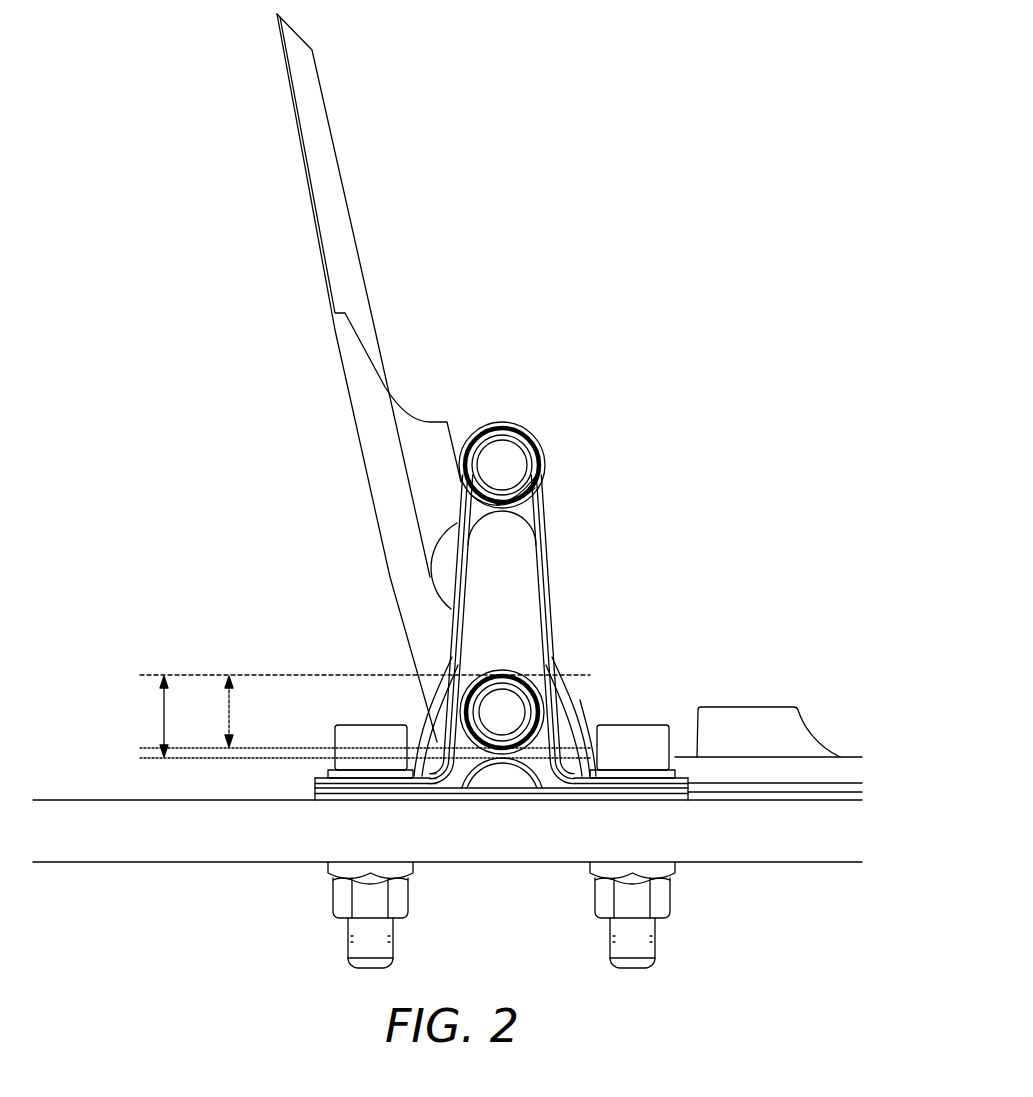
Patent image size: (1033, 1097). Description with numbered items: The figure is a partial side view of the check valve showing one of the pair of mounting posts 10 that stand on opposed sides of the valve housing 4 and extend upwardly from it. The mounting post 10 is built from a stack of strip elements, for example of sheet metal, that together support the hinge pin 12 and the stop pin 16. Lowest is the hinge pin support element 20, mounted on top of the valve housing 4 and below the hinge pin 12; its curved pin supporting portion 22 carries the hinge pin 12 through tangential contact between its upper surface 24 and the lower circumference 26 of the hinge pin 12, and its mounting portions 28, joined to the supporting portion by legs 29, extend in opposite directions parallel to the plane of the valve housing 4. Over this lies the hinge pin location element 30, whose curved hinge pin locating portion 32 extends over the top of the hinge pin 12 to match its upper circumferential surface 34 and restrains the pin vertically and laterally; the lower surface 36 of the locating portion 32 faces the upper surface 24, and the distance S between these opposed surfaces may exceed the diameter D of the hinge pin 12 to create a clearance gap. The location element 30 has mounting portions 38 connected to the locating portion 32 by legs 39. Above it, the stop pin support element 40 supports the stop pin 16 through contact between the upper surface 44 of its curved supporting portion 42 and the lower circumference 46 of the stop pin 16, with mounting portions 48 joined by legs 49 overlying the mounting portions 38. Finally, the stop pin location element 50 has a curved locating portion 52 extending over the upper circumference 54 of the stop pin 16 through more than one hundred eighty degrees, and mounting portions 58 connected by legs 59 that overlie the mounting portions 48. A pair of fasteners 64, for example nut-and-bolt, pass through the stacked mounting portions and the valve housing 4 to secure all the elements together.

The valve housing 4 is at (80, 812).
The mounting post 10 is at (237, 541).
The hinge pin 12 is at (505, 629).
The stop pin 16 is at (506, 458).
The hinge pin support element 20 is at (480, 800).
The curved pin supporting portion 22 is at (510, 800).
The upper surface 24 is at (562, 760).
The lower circumference 26 is at (445, 765).
The mounting portion 28 is at (432, 803).
The leg 29 is at (440, 780).
The hinge pin location element 30 is at (646, 748).
The curved hinge pin locating portion 32 is at (455, 660).
The upper circumferential surface 34 is at (544, 624).
The lower surface 36 is at (505, 658).
The mounting portion 38 is at (397, 803).
The leg 39 is at (440, 776).
The stop pin support element 40 is at (598, 762).
The curved supporting portion 42 is at (542, 512).
The upper surface 44 is at (541, 492).
The lower circumference 46 is at (543, 470).
The mounting portion 48 is at (362, 803).
The leg 49 is at (437, 772).
The stop pin location element 50 is at (574, 765).
The curved locating portion 52 is at (529, 430).
The upper circumference 54 is at (489, 429).
The mounting portion 58 is at (330, 803).
The leg 59 is at (433, 768).
The fastener 64 is at (337, 742).
The distance S is at (364, 716).
The diameter D is at (365, 712).